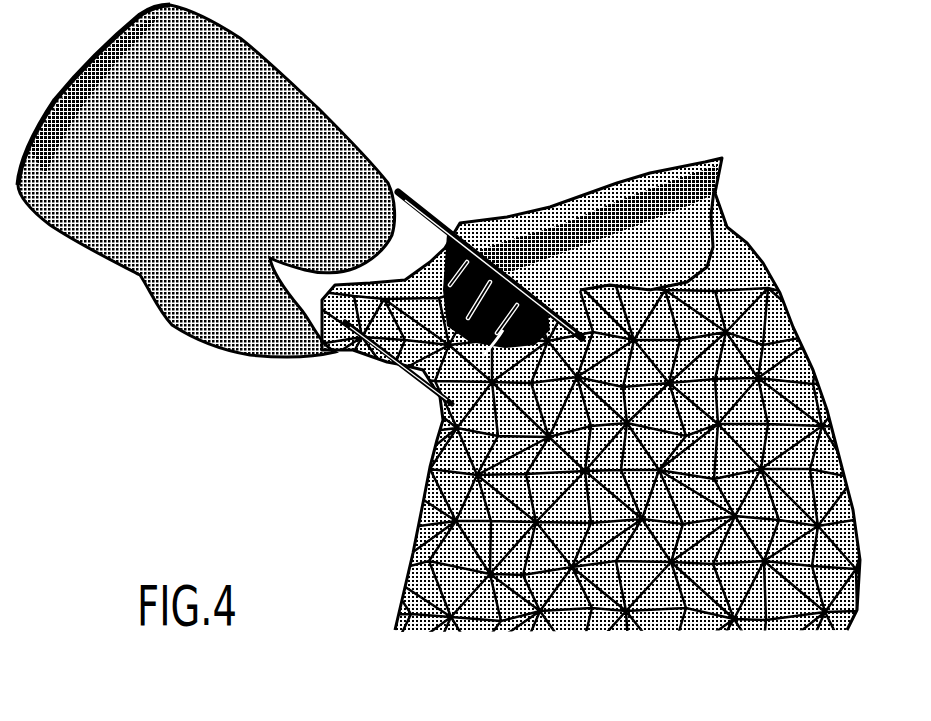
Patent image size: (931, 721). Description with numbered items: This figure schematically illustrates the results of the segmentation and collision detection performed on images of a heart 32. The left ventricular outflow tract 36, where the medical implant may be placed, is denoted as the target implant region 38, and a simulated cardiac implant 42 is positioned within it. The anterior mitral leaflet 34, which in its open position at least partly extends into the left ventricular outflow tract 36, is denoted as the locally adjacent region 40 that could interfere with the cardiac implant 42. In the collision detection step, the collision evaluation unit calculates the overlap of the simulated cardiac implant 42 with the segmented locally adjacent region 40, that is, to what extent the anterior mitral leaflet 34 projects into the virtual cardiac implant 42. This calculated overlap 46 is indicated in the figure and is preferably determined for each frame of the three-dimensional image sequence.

The heart 32 is at (801, 237).
The anterior mitral leaflet 34 is at (598, 226).
The locally adjacent region 40 is at (563, 327).
The cardiac implant 42 is at (466, 253).
The left ventricular outflow tract 36 is at (354, 376).
The target implant region 38 is at (377, 320).
The overlap 46 is at (490, 320).